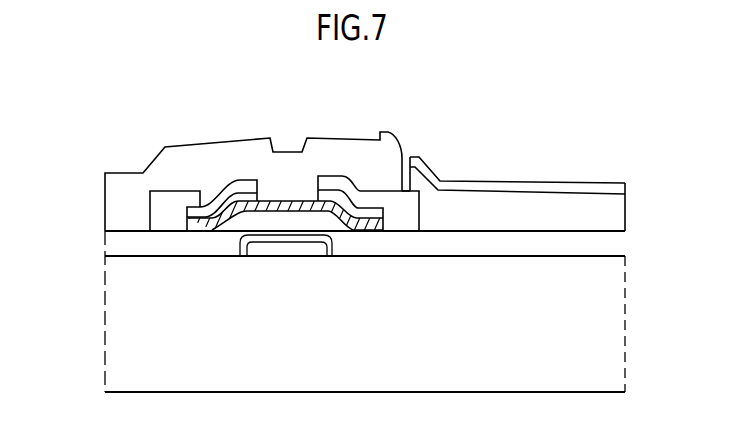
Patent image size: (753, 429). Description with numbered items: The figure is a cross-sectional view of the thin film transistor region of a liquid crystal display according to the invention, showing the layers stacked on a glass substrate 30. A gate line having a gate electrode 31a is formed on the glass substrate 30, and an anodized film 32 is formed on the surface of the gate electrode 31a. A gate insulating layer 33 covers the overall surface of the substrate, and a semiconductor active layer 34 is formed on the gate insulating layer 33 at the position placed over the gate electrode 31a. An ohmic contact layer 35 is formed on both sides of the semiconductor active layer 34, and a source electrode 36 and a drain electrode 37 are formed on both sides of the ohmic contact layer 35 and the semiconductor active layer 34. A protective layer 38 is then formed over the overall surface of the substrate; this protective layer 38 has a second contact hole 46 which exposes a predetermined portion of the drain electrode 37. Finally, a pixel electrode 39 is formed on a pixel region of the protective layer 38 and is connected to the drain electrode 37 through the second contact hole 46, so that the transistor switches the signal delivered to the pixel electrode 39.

The glass substrate 30 is at (606, 338).
The gate electrode 31a is at (307, 248).
The anodized film 32 is at (273, 240).
The gate insulating layer 33 is at (607, 245).
The semiconductor active layer 34 is at (241, 198).
The ohmic contact layer 35 is at (199, 208).
The source electrode 36 is at (162, 207).
The drain electrode 37 is at (341, 185).
The protective layer 38 is at (287, 155).
The pixel electrode 39 is at (610, 190).
The second contact hole 46 is at (407, 163).